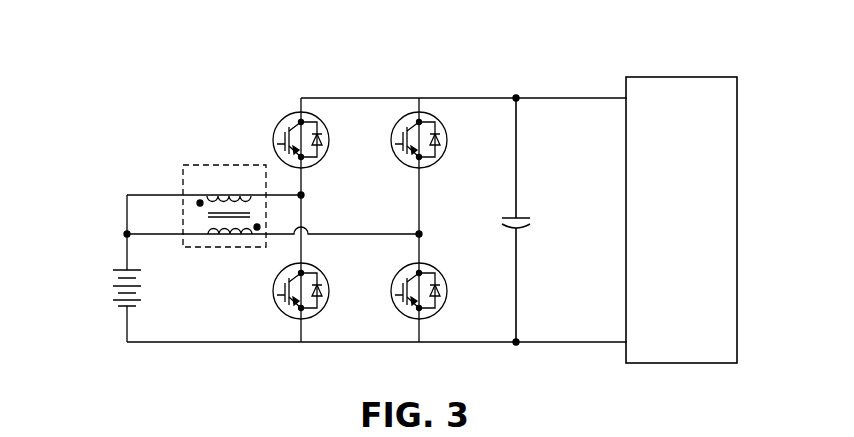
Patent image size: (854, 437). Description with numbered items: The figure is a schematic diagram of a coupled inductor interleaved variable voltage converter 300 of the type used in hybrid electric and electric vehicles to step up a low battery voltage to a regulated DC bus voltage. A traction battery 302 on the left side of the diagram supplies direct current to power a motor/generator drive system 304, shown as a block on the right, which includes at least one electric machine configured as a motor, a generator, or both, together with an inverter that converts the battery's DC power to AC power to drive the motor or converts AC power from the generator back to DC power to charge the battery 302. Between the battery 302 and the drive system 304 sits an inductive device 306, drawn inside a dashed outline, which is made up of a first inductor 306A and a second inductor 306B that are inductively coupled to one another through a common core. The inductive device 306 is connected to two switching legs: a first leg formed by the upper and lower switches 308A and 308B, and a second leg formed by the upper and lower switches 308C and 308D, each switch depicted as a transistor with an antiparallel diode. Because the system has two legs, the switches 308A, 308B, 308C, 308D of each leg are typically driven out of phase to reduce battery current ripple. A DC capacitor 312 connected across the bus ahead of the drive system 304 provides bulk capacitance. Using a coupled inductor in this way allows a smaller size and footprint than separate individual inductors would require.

The interleaved variable voltage converter 300 is at (568, 56).
The traction battery 302 is at (120, 268).
The motor/generator drive system 304 is at (667, 77).
The inductive device 306 is at (183, 183).
The first inductor 306A is at (226, 198).
The second inductor 306B is at (213, 229).
The switch 308A is at (320, 118).
The switch 308B is at (282, 315).
The switch 308C is at (440, 118).
The switch 308D is at (400, 315).
The DC capacitor 312 is at (510, 215).